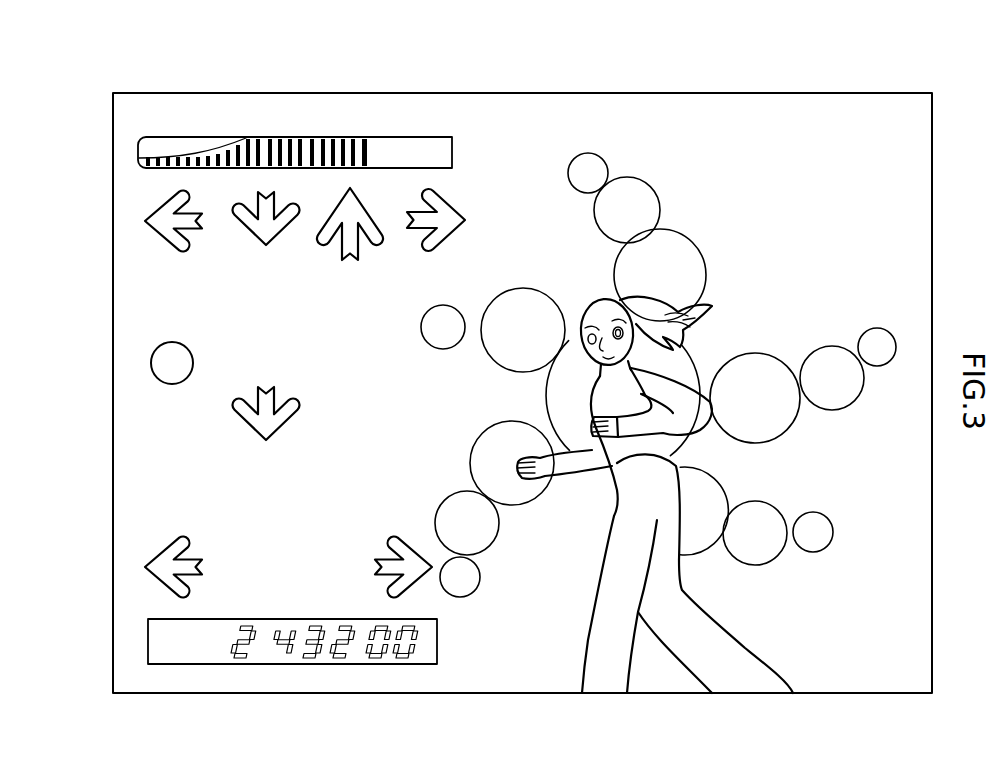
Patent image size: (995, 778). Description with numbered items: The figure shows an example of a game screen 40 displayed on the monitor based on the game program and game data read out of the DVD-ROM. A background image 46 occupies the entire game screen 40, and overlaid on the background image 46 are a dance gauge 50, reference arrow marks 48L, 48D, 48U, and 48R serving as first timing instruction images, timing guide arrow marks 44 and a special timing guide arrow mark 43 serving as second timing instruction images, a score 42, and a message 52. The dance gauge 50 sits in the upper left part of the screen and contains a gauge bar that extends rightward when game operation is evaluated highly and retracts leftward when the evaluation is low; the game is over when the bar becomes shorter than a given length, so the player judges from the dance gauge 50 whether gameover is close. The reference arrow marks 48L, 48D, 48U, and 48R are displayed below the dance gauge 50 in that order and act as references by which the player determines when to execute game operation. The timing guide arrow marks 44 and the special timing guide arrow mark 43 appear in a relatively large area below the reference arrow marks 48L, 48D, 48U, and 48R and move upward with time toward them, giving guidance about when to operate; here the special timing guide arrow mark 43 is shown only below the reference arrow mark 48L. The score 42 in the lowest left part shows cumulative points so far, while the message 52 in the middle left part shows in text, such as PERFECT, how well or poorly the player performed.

The game screen 40 is at (113, 520).
The score 42 is at (218, 664).
The special timing guide arrow mark 43 is at (170, 384).
The timing guide arrow marks 44 is at (358, 250).
The background image 46 is at (848, 613).
The reference arrow mark 48L is at (162, 243).
The reference arrow mark 48D is at (249, 238).
The reference arrow mark 48U is at (366, 203).
The reference arrow mark 48R is at (453, 237).
The dance gauge 50 is at (283, 137).
The message 52 is at (384, 350).